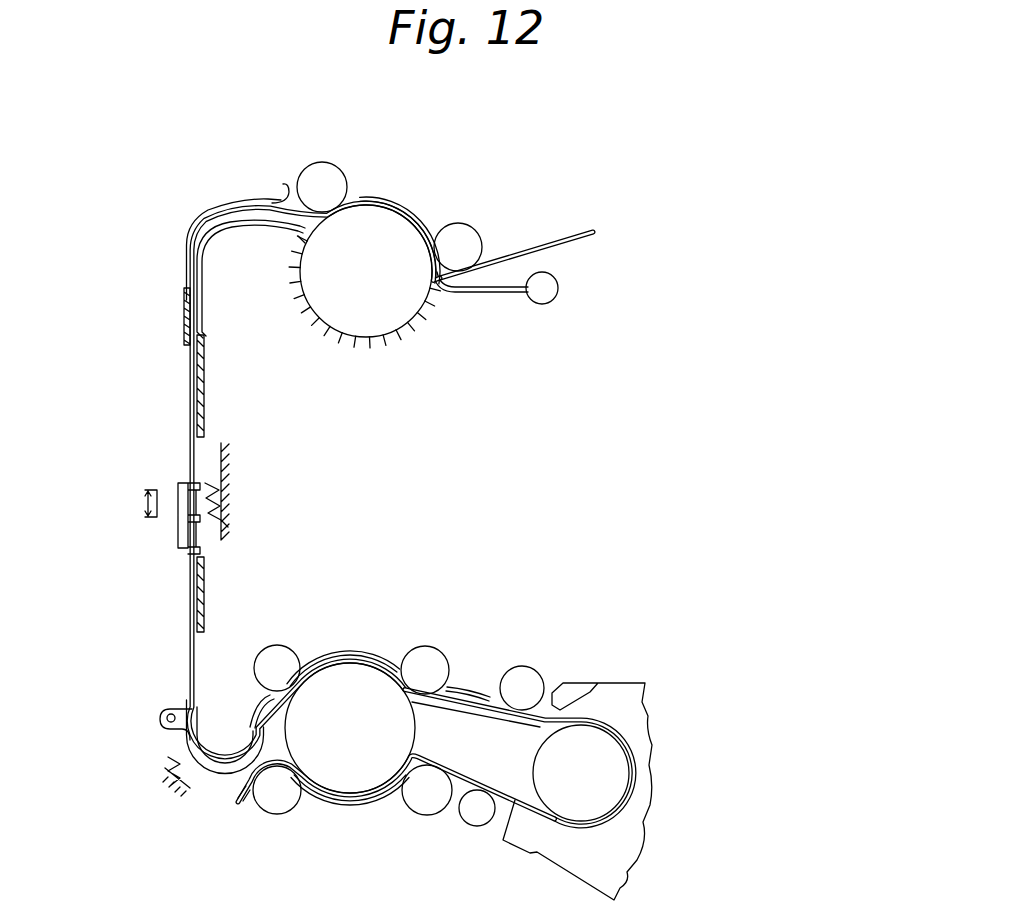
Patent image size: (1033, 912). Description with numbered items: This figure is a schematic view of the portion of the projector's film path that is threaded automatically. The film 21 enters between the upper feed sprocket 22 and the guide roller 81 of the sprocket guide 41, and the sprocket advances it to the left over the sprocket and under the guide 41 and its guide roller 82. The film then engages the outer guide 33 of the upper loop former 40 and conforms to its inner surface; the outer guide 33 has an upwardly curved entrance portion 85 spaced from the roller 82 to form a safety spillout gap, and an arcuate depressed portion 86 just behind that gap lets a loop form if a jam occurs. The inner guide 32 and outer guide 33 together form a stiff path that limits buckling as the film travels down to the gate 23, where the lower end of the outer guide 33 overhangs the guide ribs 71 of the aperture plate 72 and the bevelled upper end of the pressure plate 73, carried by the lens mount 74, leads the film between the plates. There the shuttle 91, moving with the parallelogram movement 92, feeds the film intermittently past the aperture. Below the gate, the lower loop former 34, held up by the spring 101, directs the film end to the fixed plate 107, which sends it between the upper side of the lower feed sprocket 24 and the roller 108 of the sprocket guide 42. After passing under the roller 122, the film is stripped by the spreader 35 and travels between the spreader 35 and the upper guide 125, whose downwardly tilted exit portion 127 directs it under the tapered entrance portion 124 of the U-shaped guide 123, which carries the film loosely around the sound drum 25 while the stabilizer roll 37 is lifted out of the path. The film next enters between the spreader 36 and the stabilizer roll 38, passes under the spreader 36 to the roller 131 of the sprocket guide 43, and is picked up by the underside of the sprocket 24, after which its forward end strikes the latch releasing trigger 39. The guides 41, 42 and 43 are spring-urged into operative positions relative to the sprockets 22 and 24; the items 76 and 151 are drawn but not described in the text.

The film 21 is at (556, 236).
The upper feed sprocket 22 is at (364, 276).
The gate 23 is at (174, 369).
The lower feed sprocket 24 is at (350, 728).
The sound drum 25 is at (581, 773).
The inner guide 32 is at (218, 236).
The outer guide 33 is at (243, 200).
The lower loop former 34 is at (212, 768).
The spreader 35 is at (467, 710).
The spreader 36 is at (484, 775).
The stabilizer roll 37 is at (536, 677).
The stabilizer roll 38 is at (474, 822).
The latch releasing trigger 39 is at (262, 794).
The upper loop former 40 is at (177, 208).
The sprocket guide 41 is at (416, 208).
The sprocket guide 42 is at (358, 656).
The sprocket guide 43 is at (354, 802).
The guide ribs 71 is at (183, 296).
The aperture plate 72 is at (183, 316).
The pressure plate 73 is at (207, 358).
The lens mount 74 is at (227, 466).
The spring 76 is at (229, 527).
The guide roller 81 is at (470, 236).
The guide roller 82 is at (342, 176).
The entrance portion 85 is at (283, 182).
The arcuate depressed portion 86 is at (302, 258).
The shuttle 91 is at (181, 549).
The parallelogram movement 92 is at (144, 506).
The spring 101 is at (190, 750).
The fixed plate 107 is at (262, 700).
The roller 108 is at (288, 652).
The roller 122 is at (430, 648).
The U-shaped guide 123 is at (622, 710).
The tapered entrance portion 124 is at (603, 683).
The upper guide 125 is at (459, 685).
The exit portion 127 is at (487, 693).
The roller 131 is at (422, 806).
The roller 151 is at (279, 803).